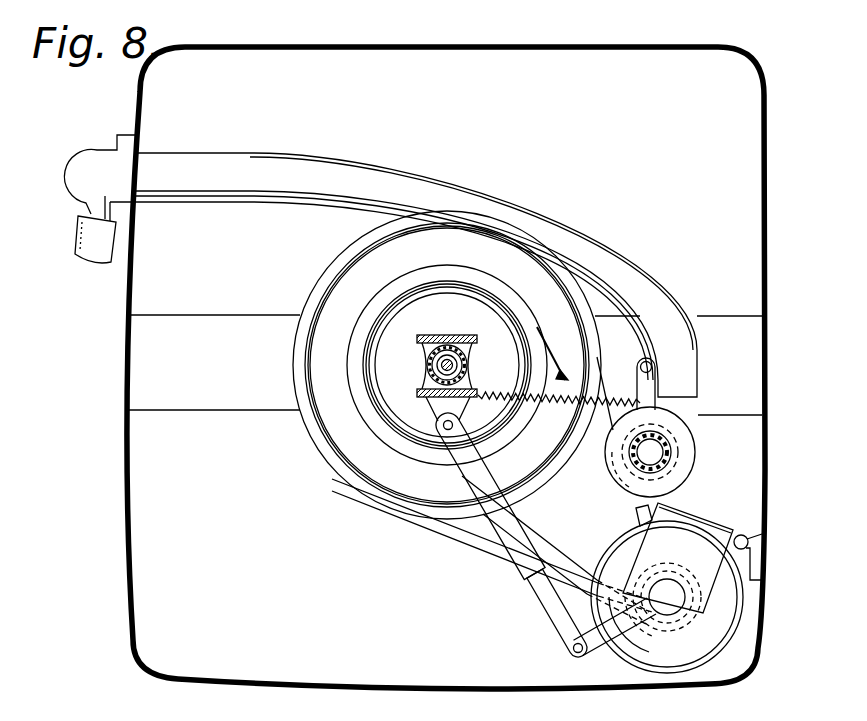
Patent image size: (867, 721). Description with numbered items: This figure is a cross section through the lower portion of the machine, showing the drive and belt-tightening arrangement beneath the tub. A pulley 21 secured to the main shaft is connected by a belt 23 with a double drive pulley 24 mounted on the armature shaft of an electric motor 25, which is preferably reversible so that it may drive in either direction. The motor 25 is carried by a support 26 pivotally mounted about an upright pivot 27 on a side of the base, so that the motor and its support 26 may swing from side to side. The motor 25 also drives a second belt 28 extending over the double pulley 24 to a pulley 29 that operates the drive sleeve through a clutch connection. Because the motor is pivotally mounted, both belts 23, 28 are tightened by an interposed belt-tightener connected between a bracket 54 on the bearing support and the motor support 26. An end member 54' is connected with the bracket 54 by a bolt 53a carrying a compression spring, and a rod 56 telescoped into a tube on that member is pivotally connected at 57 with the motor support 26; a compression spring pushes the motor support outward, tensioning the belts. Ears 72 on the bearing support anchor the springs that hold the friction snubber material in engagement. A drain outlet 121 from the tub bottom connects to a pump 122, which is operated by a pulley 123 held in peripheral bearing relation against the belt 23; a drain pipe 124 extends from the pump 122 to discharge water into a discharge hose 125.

The drain pipe 124 is at (588, 230).
The discharge hose 125 is at (95, 262).
The pulley 21 is at (330, 462).
The pulley 29 is at (347, 356).
The ears 72 is at (474, 345).
The bracket 54 is at (403, 417).
The end member 54' is at (458, 496).
The rod 56 is at (547, 613).
The pivotal connection 57 is at (572, 653).
The bolt 53a is at (388, 499).
The belt 28 is at (593, 543).
The belt 23 is at (613, 407).
The pump 122 is at (688, 440).
The drain outlet 121 is at (663, 455).
The pulley 123 is at (670, 473).
The support 26 is at (600, 645).
The upright pivot 27 is at (748, 545).
The double drive pulley 24 is at (703, 613).
The electric motor 25 is at (692, 655).